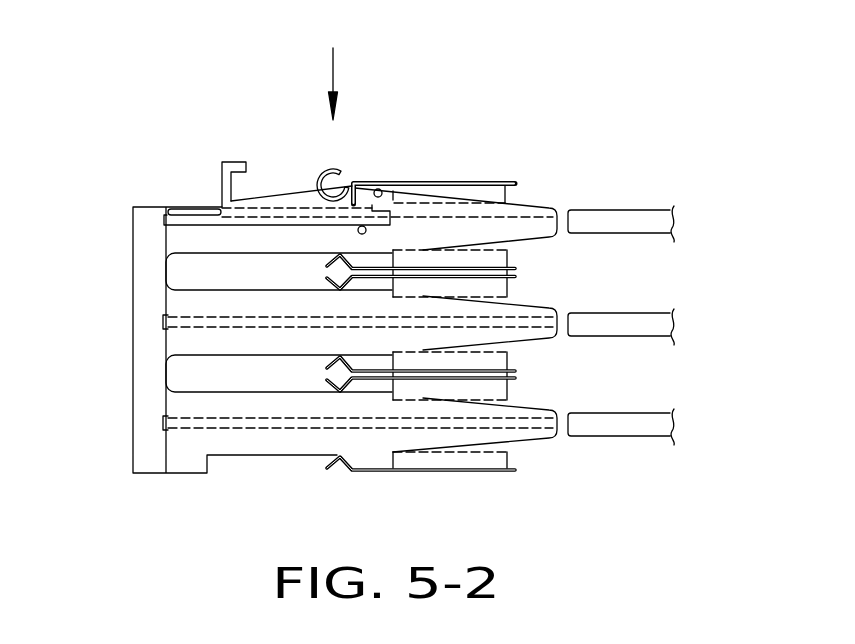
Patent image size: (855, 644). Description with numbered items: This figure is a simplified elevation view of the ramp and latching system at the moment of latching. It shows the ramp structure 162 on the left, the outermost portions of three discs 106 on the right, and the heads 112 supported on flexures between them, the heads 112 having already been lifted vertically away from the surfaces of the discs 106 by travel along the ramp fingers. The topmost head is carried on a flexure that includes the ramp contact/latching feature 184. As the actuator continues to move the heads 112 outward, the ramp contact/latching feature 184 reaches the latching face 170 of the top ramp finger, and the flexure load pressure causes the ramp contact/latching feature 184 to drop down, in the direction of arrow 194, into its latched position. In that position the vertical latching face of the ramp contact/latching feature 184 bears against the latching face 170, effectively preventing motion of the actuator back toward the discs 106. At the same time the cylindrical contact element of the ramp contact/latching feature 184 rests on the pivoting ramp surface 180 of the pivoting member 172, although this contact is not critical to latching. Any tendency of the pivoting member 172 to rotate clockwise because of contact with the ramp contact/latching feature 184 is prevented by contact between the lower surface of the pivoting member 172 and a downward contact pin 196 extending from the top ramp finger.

The ramp structure 162 is at (155, 157).
The arrow 194 is at (332, 66).
The pivoting ramp surface 180 is at (283, 198).
The ramp contact/latching feature 184 is at (368, 143).
The latching face 170 is at (381, 190).
The heads 112 is at (495, 190).
The discs 106 is at (635, 220).
The pivoting member 172 is at (250, 212).
The downward contact pin 196 is at (358, 233).